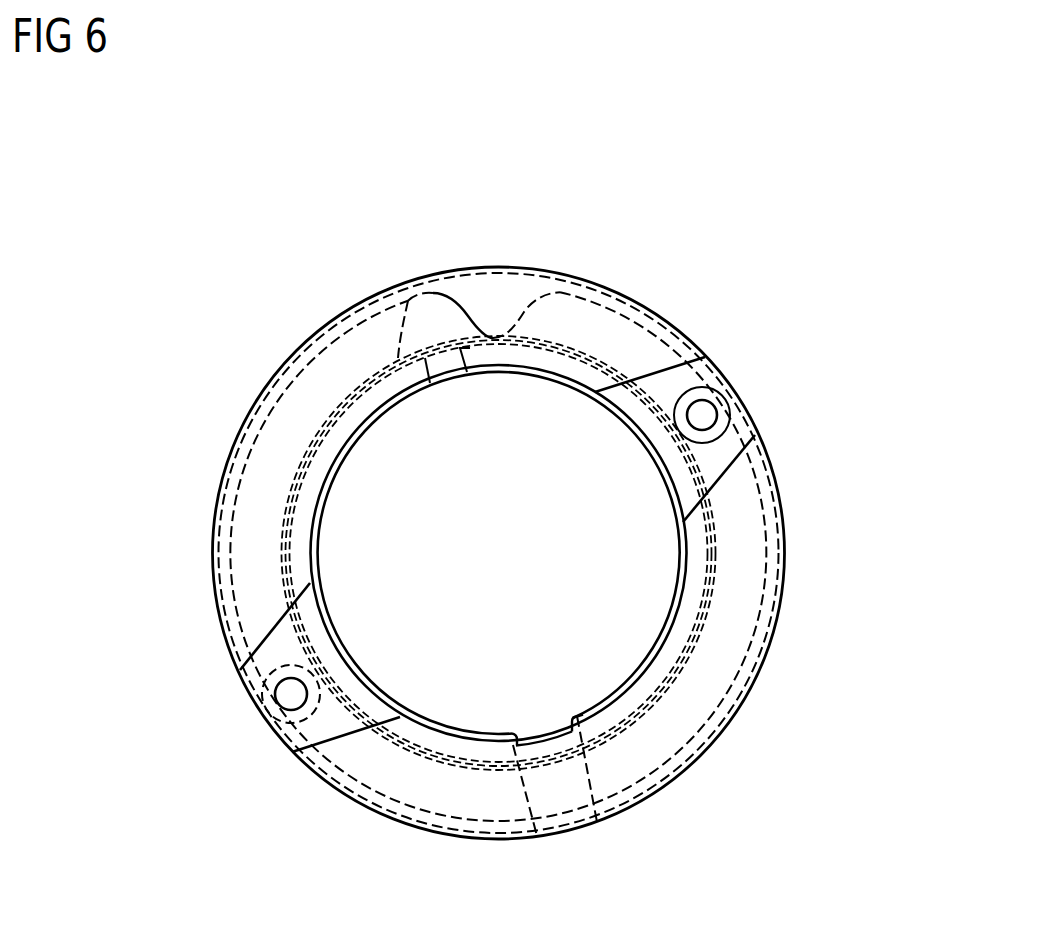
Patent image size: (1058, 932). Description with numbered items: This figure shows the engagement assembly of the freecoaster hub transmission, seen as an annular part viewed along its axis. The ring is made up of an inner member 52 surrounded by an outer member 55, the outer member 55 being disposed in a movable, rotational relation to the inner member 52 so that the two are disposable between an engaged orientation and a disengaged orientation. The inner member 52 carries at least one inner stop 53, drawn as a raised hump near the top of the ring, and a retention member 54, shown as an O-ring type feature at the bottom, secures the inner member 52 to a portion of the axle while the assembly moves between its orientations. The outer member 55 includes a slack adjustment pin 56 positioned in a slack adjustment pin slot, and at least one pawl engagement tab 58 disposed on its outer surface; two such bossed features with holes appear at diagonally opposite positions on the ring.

The inner member 52 is at (320, 527).
The inner stop 53 is at (432, 320).
The retention member 54 is at (550, 743).
The outer member 55 is at (747, 707).
The slack adjustment pin 56 is at (287, 695).
The pawl engagement tab 58 is at (725, 455).